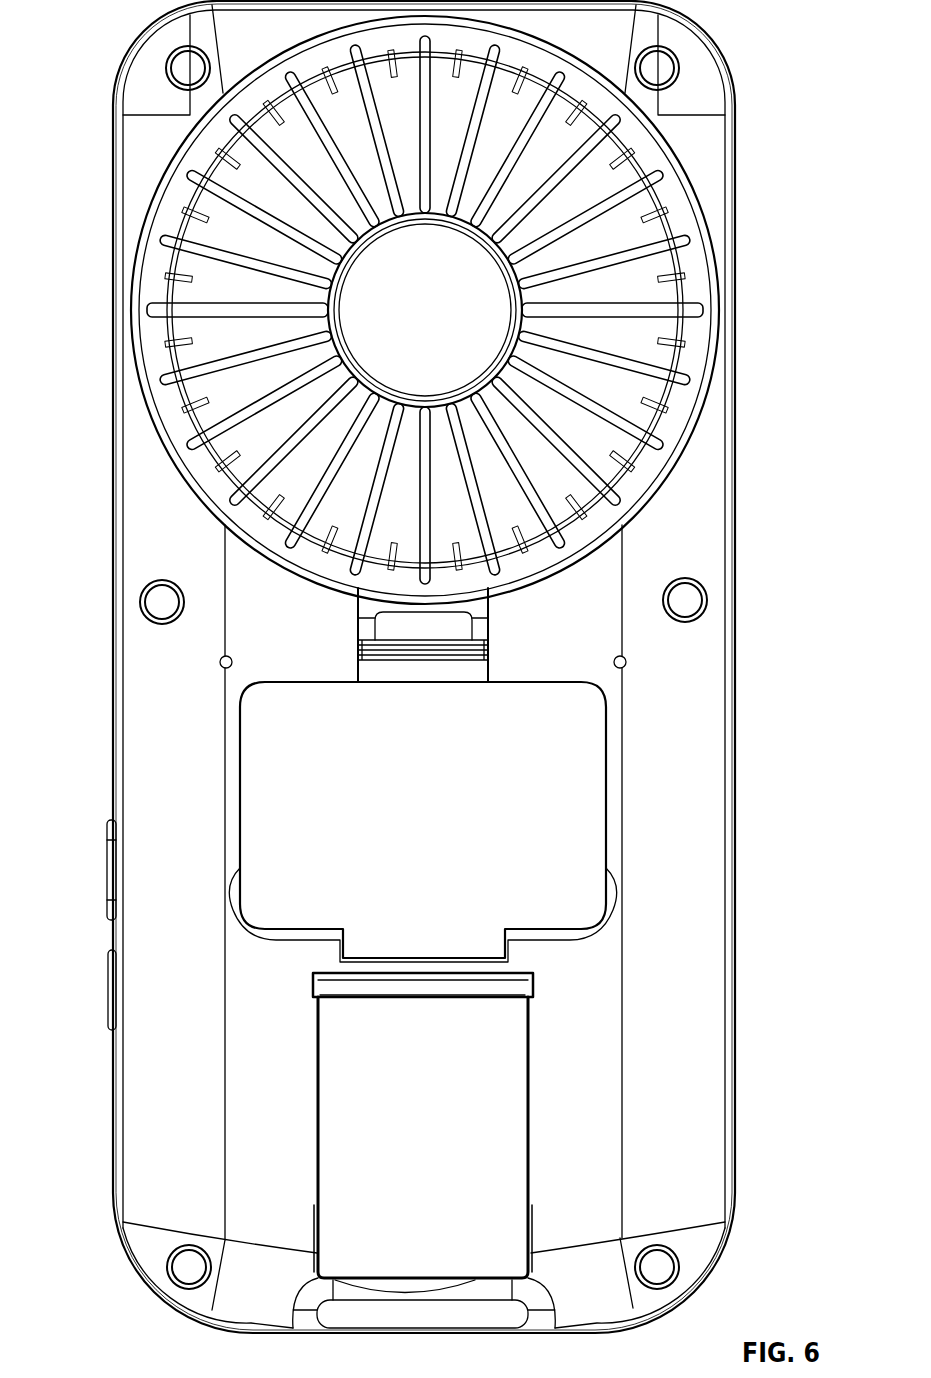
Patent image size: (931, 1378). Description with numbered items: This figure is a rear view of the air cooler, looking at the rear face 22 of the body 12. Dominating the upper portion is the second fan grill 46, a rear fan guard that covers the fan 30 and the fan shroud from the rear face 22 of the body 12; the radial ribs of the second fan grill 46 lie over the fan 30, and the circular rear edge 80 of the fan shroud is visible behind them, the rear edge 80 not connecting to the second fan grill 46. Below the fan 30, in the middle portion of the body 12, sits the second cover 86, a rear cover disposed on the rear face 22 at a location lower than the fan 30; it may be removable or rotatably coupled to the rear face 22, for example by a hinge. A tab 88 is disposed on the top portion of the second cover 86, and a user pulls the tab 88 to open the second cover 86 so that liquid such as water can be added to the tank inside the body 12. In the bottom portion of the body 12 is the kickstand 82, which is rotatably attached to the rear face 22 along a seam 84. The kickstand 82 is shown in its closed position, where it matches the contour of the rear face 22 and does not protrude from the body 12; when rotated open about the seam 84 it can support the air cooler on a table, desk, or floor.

The body 12 is at (118, 1152).
The rear face 22 is at (135, 693).
The fan 30 is at (623, 173).
The second fan grill 46 is at (627, 190).
The rear edge 80 is at (176, 337).
The kickstand 82 is at (470, 1108).
The seam 84 is at (517, 980).
The second cover 86 is at (527, 820).
The tab 88 is at (402, 625).